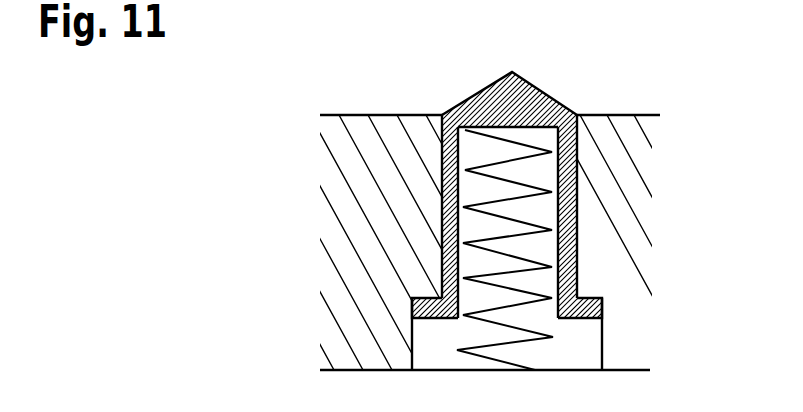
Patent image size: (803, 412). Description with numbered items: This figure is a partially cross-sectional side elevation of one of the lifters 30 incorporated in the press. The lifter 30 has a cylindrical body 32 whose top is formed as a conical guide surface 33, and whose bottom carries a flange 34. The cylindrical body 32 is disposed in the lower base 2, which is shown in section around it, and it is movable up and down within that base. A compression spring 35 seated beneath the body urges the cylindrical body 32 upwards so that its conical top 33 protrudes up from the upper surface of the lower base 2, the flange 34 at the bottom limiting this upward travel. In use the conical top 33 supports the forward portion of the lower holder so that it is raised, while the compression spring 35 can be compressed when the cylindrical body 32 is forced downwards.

The lower base 2 is at (351, 122).
The lifter 30 is at (484, 175).
The cylindrical body 32 is at (577, 188).
The guide surface 33 is at (540, 98).
The flange 34 is at (597, 308).
The compression spring 35 is at (485, 216).